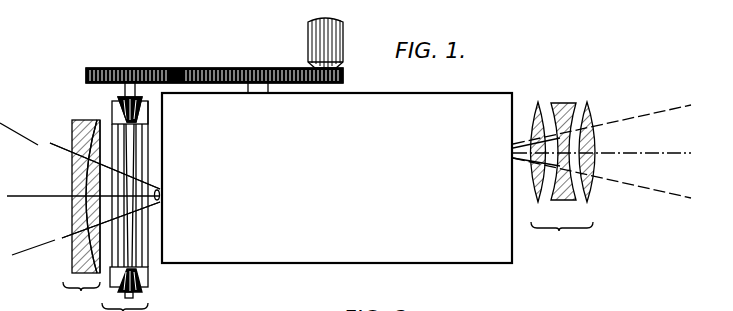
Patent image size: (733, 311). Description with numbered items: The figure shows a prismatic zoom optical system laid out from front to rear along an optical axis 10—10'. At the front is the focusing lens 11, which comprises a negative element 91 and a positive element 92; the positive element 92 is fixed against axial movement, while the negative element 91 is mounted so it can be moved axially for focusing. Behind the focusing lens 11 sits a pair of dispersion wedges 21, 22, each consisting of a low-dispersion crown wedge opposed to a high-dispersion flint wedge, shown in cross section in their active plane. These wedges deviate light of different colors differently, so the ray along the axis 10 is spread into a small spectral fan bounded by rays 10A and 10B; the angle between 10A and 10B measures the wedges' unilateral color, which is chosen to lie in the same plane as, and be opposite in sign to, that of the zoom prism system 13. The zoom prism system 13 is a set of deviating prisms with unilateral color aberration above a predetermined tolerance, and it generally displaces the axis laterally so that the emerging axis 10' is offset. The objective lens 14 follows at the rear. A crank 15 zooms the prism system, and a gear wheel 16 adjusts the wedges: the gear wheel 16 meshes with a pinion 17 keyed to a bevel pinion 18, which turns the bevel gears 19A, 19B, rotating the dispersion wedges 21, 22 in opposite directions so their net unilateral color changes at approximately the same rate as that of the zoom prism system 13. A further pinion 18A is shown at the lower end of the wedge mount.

The optical axis 10 is at (80, 189).
The optical axis 10' is at (602, 151).
The spectral fan ray 10A is at (163, 190).
The spectral fan ray 10B is at (164, 200).
The focusing lens 11 is at (81, 215).
The zoom prism system 13 is at (298, 250).
The objective lens 14 is at (563, 180).
The crank 15 is at (307, 31).
The gear wheel 16 is at (233, 68).
The pinion 17 is at (145, 68).
The bevel pinion 18 is at (116, 97).
The lower pinion gear 18A is at (148, 280).
The bevel gear 19A is at (112, 105).
The bevel gear 19B is at (148, 117).
The dispersion wedge 21 is at (118, 150).
The dispersion wedge 22 is at (137, 163).
The negative element 91 is at (72, 165).
The positive element 92 is at (83, 214).